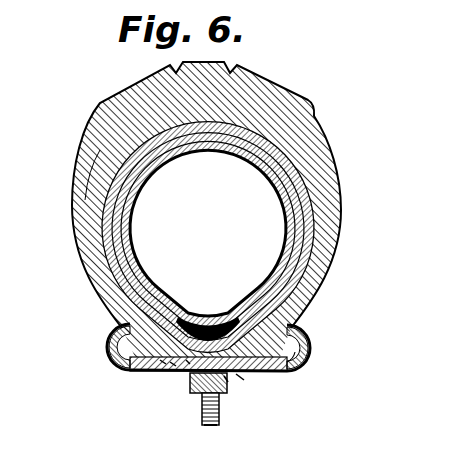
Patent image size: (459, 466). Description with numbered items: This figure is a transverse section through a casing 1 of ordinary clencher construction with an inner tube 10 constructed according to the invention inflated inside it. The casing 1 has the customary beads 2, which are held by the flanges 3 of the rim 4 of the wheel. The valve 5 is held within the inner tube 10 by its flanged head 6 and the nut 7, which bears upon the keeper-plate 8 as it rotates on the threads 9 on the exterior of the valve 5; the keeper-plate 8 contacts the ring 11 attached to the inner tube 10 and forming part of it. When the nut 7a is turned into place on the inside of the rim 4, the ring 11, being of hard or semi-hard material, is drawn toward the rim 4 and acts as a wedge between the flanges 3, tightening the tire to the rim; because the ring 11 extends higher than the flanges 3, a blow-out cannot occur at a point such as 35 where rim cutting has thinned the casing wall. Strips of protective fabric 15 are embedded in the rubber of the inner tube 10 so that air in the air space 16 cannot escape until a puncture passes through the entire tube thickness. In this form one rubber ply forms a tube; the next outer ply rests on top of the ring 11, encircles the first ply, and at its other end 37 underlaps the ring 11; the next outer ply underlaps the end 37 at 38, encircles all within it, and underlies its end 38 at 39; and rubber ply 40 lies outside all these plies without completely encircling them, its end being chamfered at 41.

The casing 1 is at (272, 92).
The rubber ply 40 is at (262, 133).
The fabric strips 15 is at (140, 178).
The air space 16 is at (208, 233).
The inner tube 10 is at (287, 212).
The flanged head 6 is at (192, 312).
The chamfered end 41 is at (110, 285).
The point of thinned casing wall 35 is at (48, 285).
The flanges 3 is at (125, 330).
The beads 2 is at (113, 357).
The end of second rubber ply 37 is at (303, 355).
The ring 11 is at (277, 372).
The keeper-plate 8 is at (242, 368).
The valve 5 is at (219, 410).
The threads 9 is at (206, 425).
The nut 7 is at (188, 363).
The nut 7a is at (227, 381).
The rim 4 is at (163, 362).
The end of third rubber ply 39 is at (172, 365).
The end of third rubber ply 38 is at (240, 378).